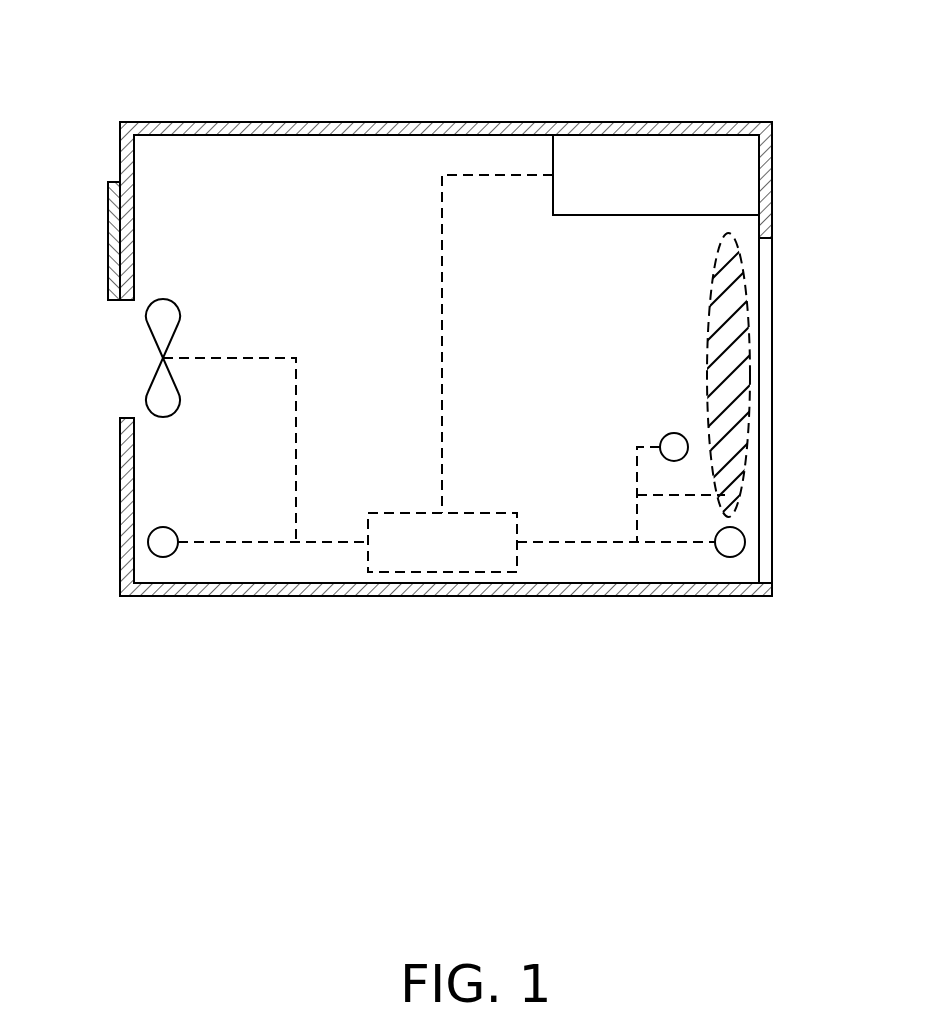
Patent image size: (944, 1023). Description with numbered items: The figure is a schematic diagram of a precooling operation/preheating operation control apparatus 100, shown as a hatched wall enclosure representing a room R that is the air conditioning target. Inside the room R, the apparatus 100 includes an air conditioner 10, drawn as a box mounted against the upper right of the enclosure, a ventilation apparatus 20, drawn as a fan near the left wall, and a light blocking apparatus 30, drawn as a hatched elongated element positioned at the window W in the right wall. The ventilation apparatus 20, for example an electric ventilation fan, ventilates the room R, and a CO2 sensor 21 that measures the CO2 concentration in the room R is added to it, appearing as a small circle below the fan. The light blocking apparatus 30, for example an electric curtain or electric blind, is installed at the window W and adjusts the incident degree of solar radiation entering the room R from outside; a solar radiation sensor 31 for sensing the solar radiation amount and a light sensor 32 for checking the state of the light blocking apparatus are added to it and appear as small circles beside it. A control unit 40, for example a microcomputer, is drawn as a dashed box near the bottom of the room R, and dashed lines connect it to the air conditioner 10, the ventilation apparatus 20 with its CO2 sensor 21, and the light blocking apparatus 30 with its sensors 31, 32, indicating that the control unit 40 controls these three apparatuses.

The precooling operation/preheating operation control apparatus 100 is at (110, 107).
The room R is at (193, 192).
The window W is at (763, 347).
The air conditioner 10 is at (574, 181).
The ventilation apparatus 20 is at (182, 314).
The CO2 sensor 21 is at (163, 540).
The light blocking apparatus 30 is at (715, 375).
The solar radiation sensor 31 is at (730, 542).
The light sensor 32 is at (674, 447).
The control unit 40 is at (488, 540).